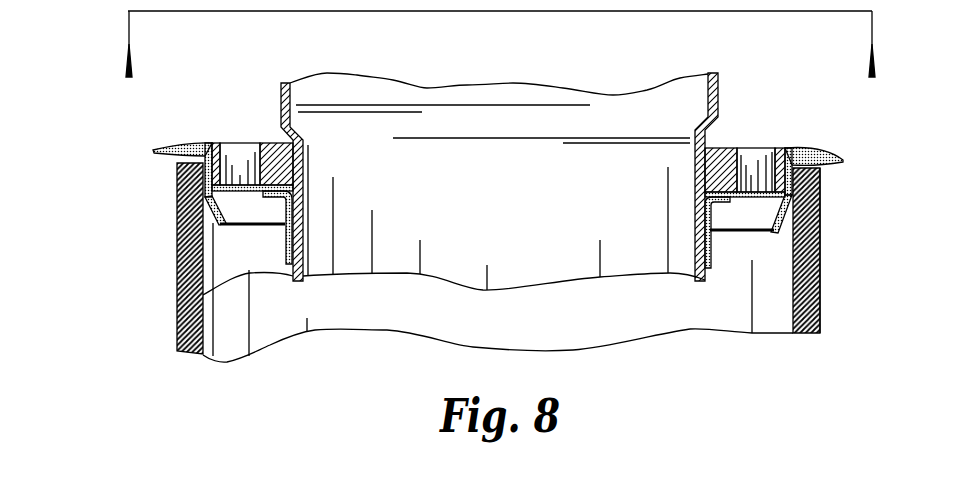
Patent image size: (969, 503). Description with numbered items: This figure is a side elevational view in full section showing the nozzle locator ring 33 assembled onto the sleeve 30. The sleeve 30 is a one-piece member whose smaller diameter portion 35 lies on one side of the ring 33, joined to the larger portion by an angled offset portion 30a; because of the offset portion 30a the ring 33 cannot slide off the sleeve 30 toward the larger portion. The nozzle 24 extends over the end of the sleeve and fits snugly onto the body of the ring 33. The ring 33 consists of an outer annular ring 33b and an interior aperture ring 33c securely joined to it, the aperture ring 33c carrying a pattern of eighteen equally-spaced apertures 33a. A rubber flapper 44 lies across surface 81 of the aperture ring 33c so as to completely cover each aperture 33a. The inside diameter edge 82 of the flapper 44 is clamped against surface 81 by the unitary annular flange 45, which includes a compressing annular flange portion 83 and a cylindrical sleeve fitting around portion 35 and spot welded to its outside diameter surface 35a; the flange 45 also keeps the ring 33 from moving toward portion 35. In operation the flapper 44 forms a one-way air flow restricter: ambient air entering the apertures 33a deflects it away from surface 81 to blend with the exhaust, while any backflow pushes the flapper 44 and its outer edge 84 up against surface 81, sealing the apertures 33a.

The sleeve 30 is at (718, 100).
The angled offset portion 30a is at (720, 133).
The nozzle locator ring 33 is at (215, 141).
The apertures 33a is at (768, 163).
The outer annular ring 33b is at (812, 150).
The interior aperture ring 33c is at (273, 143).
The outer edge 84 is at (177, 203).
The compressing annular flange portion 83 is at (280, 197).
The smaller diameter portion 35 is at (177, 308).
The inside diameter edge 82 is at (302, 191).
The outside diameter surface 35a is at (707, 280).
The annular flange 45 is at (720, 253).
The surface 81 is at (720, 198).
The flapper 44 is at (820, 207).
The nozzle 24 is at (820, 266).